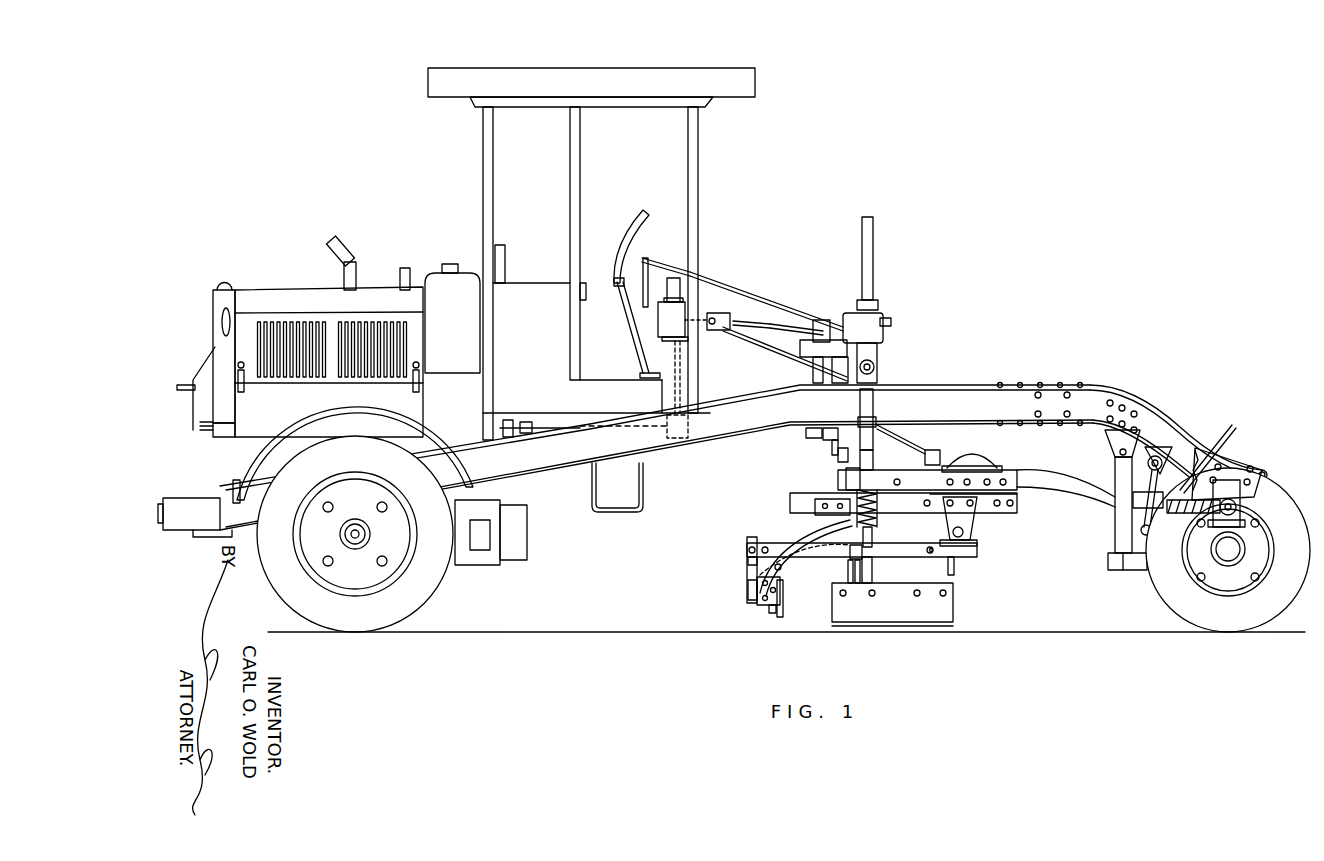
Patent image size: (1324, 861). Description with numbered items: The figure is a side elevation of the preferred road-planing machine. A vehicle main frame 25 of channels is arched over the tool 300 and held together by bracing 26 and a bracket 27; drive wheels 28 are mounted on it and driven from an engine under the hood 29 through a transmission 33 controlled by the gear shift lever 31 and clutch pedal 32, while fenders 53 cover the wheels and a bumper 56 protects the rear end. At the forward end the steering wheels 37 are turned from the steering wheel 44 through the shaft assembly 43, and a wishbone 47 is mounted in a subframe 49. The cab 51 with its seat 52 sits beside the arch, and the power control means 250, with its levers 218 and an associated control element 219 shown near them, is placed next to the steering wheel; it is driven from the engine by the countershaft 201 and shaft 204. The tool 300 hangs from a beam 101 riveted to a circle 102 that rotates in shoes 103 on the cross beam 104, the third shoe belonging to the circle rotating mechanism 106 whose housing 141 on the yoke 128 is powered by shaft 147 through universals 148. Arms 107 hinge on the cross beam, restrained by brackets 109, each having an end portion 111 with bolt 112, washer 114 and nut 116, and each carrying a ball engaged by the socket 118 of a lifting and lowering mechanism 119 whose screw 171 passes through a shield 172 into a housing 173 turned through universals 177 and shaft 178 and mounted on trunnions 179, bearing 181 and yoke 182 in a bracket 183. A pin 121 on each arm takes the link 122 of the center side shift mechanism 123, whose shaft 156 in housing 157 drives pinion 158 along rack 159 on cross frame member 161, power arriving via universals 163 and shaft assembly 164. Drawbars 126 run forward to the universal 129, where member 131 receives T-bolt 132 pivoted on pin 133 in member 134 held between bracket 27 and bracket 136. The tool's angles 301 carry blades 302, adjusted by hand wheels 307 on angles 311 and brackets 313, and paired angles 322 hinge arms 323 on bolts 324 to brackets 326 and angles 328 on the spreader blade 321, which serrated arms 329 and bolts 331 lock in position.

The vehicle main frame 25 is at (1148, 372).
The bracing 26 is at (1062, 386).
The bracket 27 is at (1233, 463).
The drive wheels 28 is at (401, 598).
The hood 29 is at (290, 292).
The gear shift lever 31 is at (620, 305).
The clutch pedal 32 is at (643, 373).
The transmission 33 is at (493, 547).
The steering wheels 37 is at (1238, 614).
The shaft assembly 43 is at (965, 382).
The steering wheel 44 is at (642, 218).
The wishbone 47 is at (1120, 572).
The subframe 49 is at (1115, 531).
The cab 51 is at (603, 78).
The seat 52 is at (583, 290).
The fenders 53 is at (300, 419).
The bumper 56 is at (186, 506).
The beam 101 is at (1017, 503).
The circle 102 is at (790, 505).
The shoes 103 is at (838, 488).
The cross beam 104 is at (846, 521).
The circle rotating mechanism 106 is at (982, 450).
The arms 107 is at (873, 540).
The brackets 109 is at (878, 422).
The end portion 111 is at (900, 482).
The bolt 112 is at (872, 560).
The washer 114 is at (854, 570).
The nut 116 is at (863, 538).
The socket 118 is at (878, 503).
The tool lifting and lowering mechanisms 119 is at (885, 320).
The pin 121 is at (846, 476).
The link 122 is at (841, 456).
The center side shift mechanism 123 is at (815, 330).
The drawbars 126 is at (1071, 475).
The yoke 128 is at (1004, 467).
The universal 129 is at (1234, 427).
The member 131 is at (1158, 452).
The T-bolt 132 is at (1178, 530).
The pin 133 is at (1250, 490).
The member 134 is at (1244, 510).
The bracket 136 is at (1222, 592).
The housing 141 is at (988, 462).
The shaft 147 is at (722, 330).
The universals 148 is at (935, 450).
The shaft 156 is at (800, 368).
The housing 157 is at (790, 356).
The pinion 158 is at (808, 432).
The rack 159 is at (826, 440).
The cross frame member 161 is at (843, 385).
The universals 163 is at (773, 320).
The shaft assembly 164 is at (719, 314).
The screw 171 is at (876, 461).
The shield 172 is at (875, 405).
The housing 173 is at (892, 322).
The universals 177 is at (723, 312).
The shaft 178 is at (748, 318).
The trunnions 179 is at (882, 350).
The bearing 181 is at (822, 384).
The yoke 182 is at (876, 368).
The bracket 183 is at (803, 385).
The countershaft 201 is at (604, 424).
The shaft 204 is at (666, 401).
The levers 218 is at (650, 290).
The lever rod 219 is at (662, 260).
The power control means 250 is at (686, 312).
The tool 300 is at (955, 604).
The angles 301 is at (978, 557).
The blades 302 is at (955, 624).
The hand wheels 307 is at (978, 543).
The angles 311 is at (955, 565).
The brackets 313 is at (975, 522).
The spreader blade 321 is at (783, 612).
The angles 322 is at (751, 546).
The arms 323 is at (779, 570).
The bolts 324 is at (931, 558).
The brackets 326 is at (758, 594).
The angles 328 is at (772, 613).
The serrated arms 329 is at (750, 588).
The bolts 331 is at (750, 560).